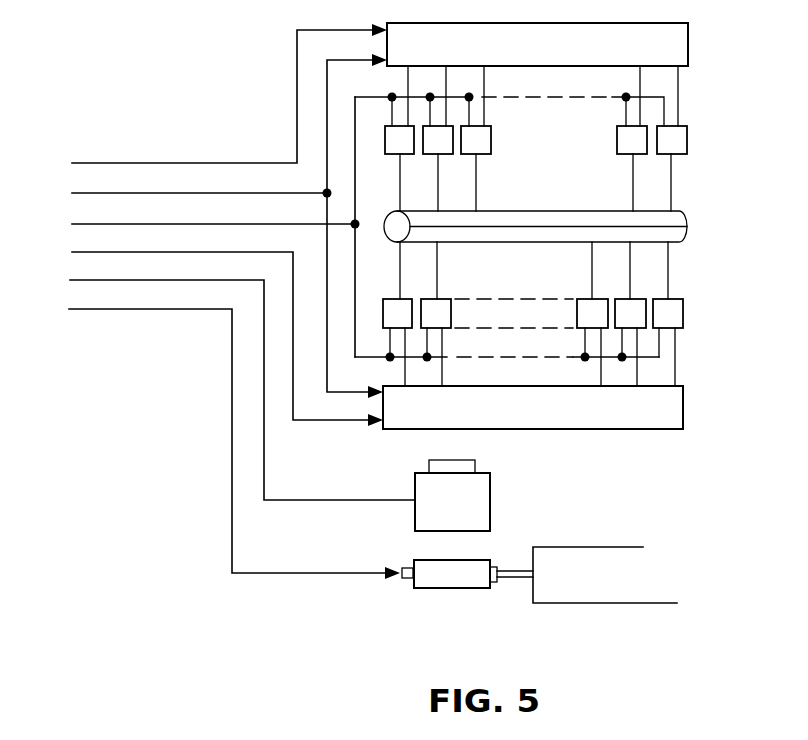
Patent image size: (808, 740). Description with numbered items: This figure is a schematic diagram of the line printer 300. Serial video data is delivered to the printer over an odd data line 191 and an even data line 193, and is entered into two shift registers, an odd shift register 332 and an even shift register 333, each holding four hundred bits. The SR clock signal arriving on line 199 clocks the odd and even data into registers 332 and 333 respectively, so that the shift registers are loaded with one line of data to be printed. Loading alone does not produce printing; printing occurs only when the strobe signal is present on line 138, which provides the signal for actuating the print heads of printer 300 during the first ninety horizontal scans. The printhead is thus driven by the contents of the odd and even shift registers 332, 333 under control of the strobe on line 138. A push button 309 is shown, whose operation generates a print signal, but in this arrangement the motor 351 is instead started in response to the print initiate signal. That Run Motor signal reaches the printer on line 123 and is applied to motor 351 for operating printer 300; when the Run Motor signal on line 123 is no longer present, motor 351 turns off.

The shift register 332 is at (625, 24).
The shift register 333 is at (648, 430).
The printer 300 is at (708, 177).
The odd data line 191 is at (200, 151).
The line 199 is at (200, 186).
The line 138 is at (200, 216).
The even data line 193 is at (200, 245).
The line 123 is at (181, 310).
The push button 309 is at (493, 478).
The motor 351 is at (456, 589).